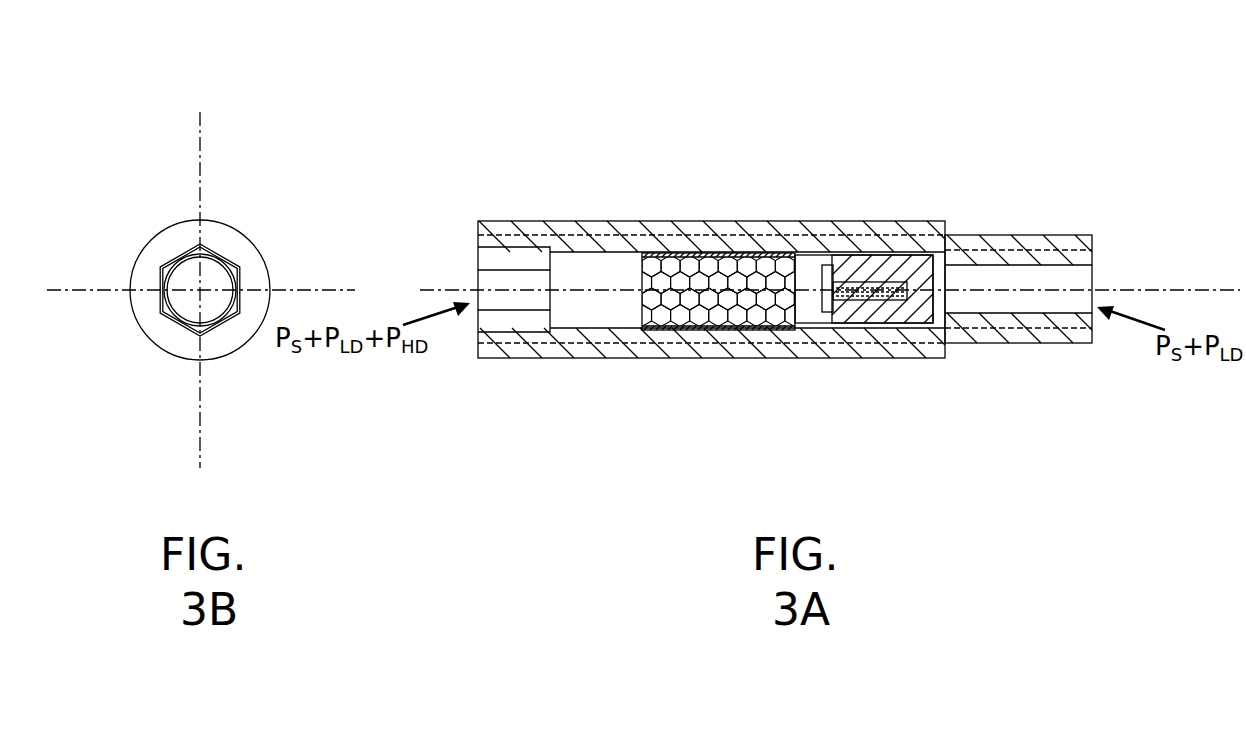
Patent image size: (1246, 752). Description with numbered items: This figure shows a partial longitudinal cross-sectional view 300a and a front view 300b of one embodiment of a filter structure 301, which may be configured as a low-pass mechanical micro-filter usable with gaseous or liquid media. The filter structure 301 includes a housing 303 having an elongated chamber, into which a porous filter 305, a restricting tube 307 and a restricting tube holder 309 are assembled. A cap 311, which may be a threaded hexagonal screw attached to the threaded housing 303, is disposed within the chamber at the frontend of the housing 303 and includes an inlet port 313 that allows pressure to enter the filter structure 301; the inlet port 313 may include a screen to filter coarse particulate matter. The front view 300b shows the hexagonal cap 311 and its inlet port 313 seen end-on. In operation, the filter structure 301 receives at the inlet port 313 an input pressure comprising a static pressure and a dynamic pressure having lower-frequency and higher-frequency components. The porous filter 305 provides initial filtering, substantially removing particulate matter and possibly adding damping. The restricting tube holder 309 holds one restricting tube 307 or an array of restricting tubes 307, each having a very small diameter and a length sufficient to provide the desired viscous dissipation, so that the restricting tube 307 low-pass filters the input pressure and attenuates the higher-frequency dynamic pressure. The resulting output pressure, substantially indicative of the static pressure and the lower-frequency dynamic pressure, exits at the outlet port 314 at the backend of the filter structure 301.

In FIG. 3A, the partial longitudinal cross-sectional view 300a is at (838, 43).
In FIG. 3B, the front view 300b is at (226, 43).
In FIG. 3B, the filter structure 301 is at (153, 435).
In FIG. 3A, the filter structure 301 is at (596, 435).
In FIG. 3A, the housing 303 is at (805, 205).
In FIG. 3A, the porous filter 305 is at (718, 238).
In FIG. 3A, the restricting tube 307 is at (888, 310).
In FIG. 3A, the restricting tube holder 309 is at (824, 326).
In FIG. 3B, the cap 311 is at (223, 246).
In FIG. 3B, the inlet port 313 is at (180, 280).
In FIG. 3A, the inlet port 313 is at (460, 273).
In FIG. 3A, the outlet port 314 is at (1108, 270).